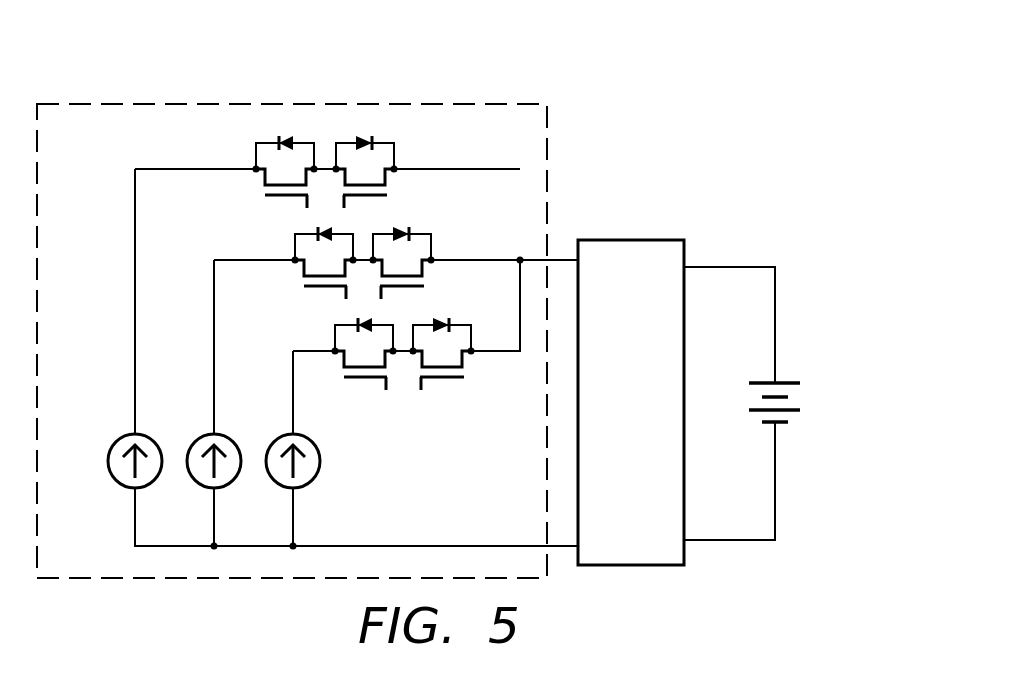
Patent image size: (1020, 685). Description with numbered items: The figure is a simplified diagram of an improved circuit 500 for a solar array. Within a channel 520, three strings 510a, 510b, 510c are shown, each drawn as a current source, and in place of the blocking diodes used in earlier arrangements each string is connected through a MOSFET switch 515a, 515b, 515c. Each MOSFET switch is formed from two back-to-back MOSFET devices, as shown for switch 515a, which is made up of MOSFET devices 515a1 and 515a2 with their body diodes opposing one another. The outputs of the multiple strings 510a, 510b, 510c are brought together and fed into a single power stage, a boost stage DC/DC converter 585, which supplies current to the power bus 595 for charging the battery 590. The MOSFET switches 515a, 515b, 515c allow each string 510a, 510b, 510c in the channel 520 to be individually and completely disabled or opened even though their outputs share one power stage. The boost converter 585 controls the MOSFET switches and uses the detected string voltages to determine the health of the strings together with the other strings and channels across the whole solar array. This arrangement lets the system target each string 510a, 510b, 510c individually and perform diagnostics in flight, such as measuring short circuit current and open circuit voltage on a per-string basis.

The improved circuit 500 is at (652, 150).
The channel 520 is at (172, 104).
The MOSFET switch 515a is at (246, 150).
The MOSFET device 515a1 is at (273, 199).
The MOSFET device 515a2 is at (388, 199).
The MOSFET switch 515b is at (284, 245).
The MOSFET switch 515c is at (322, 328).
The string 510a is at (113, 452).
The string 510b is at (191, 452).
The string 510c is at (270, 452).
The boost stage DC/DC converter 585 is at (610, 410).
The battery 590 is at (790, 400).
The power bus 595 is at (742, 266).